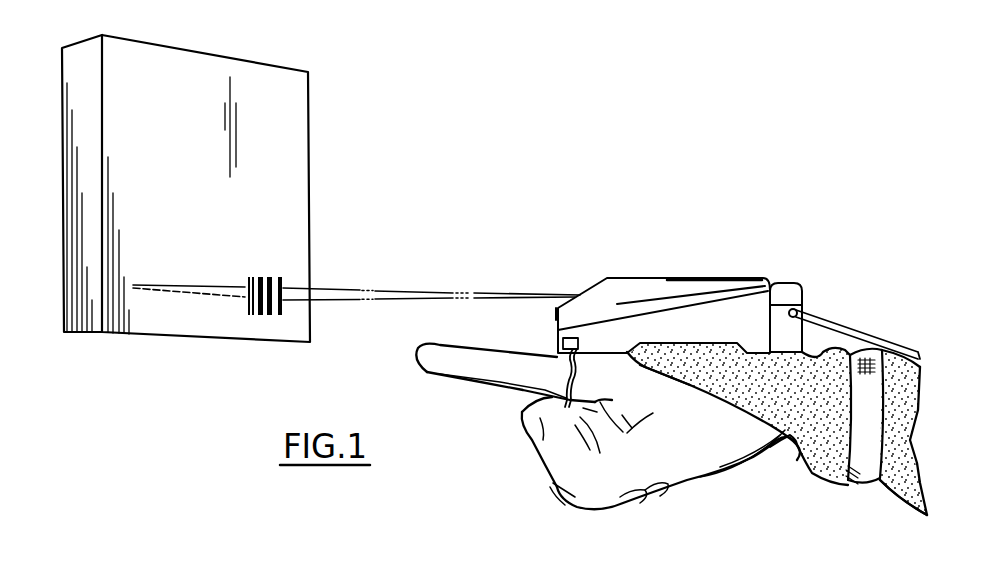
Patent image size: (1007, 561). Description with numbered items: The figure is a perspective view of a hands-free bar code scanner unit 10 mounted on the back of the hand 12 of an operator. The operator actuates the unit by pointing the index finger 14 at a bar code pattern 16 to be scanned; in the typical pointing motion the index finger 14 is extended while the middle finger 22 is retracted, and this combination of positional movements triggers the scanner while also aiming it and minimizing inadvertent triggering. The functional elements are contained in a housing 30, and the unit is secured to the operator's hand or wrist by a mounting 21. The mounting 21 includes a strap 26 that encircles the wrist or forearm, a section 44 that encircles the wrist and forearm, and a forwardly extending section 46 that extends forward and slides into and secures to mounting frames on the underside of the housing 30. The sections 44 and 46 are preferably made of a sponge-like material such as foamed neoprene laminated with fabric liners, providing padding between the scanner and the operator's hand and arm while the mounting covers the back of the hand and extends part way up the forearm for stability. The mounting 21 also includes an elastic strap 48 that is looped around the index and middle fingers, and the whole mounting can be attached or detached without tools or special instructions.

The hands-free bar code scanner unit 10 is at (738, 276).
The hand 12 is at (678, 440).
The index finger 14 is at (492, 357).
The bar code pattern 16 is at (283, 278).
The mounting 21 is at (783, 438).
The middle finger 22 is at (537, 452).
The strap 26 is at (847, 485).
The housing 30 is at (663, 315).
The mounting section encircling wrist and forearm 44 is at (893, 507).
The forwardly extending section 46 is at (673, 382).
The elastic strap 48 is at (527, 388).